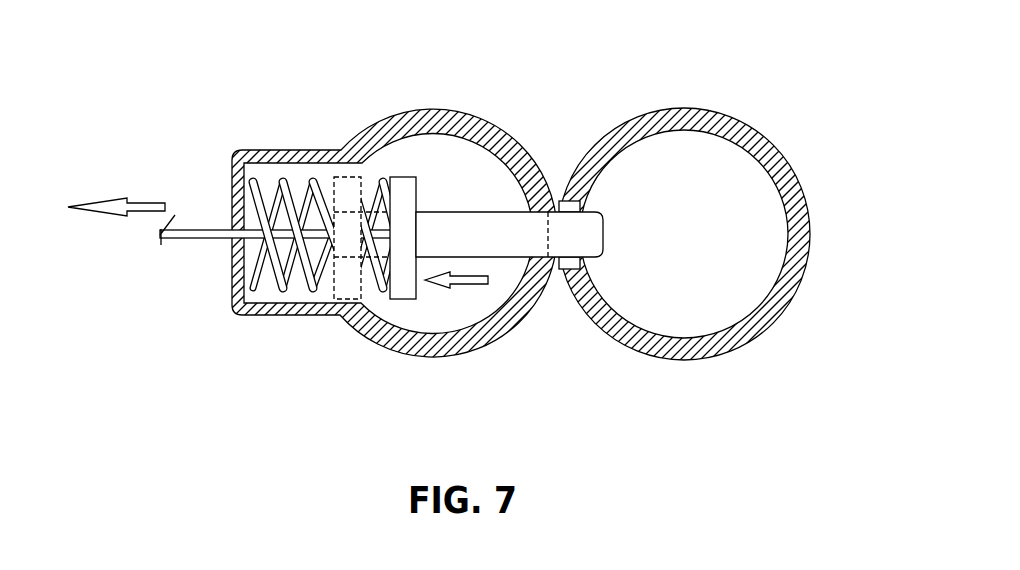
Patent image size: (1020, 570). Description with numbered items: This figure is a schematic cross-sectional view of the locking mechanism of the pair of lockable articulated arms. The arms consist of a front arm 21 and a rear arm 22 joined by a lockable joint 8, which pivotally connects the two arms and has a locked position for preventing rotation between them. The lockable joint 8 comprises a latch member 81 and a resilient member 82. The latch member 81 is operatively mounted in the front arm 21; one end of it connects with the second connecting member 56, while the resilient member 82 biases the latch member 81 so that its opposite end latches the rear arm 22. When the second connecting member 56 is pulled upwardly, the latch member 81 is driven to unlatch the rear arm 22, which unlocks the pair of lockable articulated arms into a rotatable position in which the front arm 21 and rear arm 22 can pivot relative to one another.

The lockable joint 8 is at (510, 236).
The front arm 21 is at (477, 338).
The rear arm 22 is at (752, 323).
The second connecting member 56 is at (197, 232).
The latch member 81 is at (465, 217).
The resilient member 82 is at (239, 149).